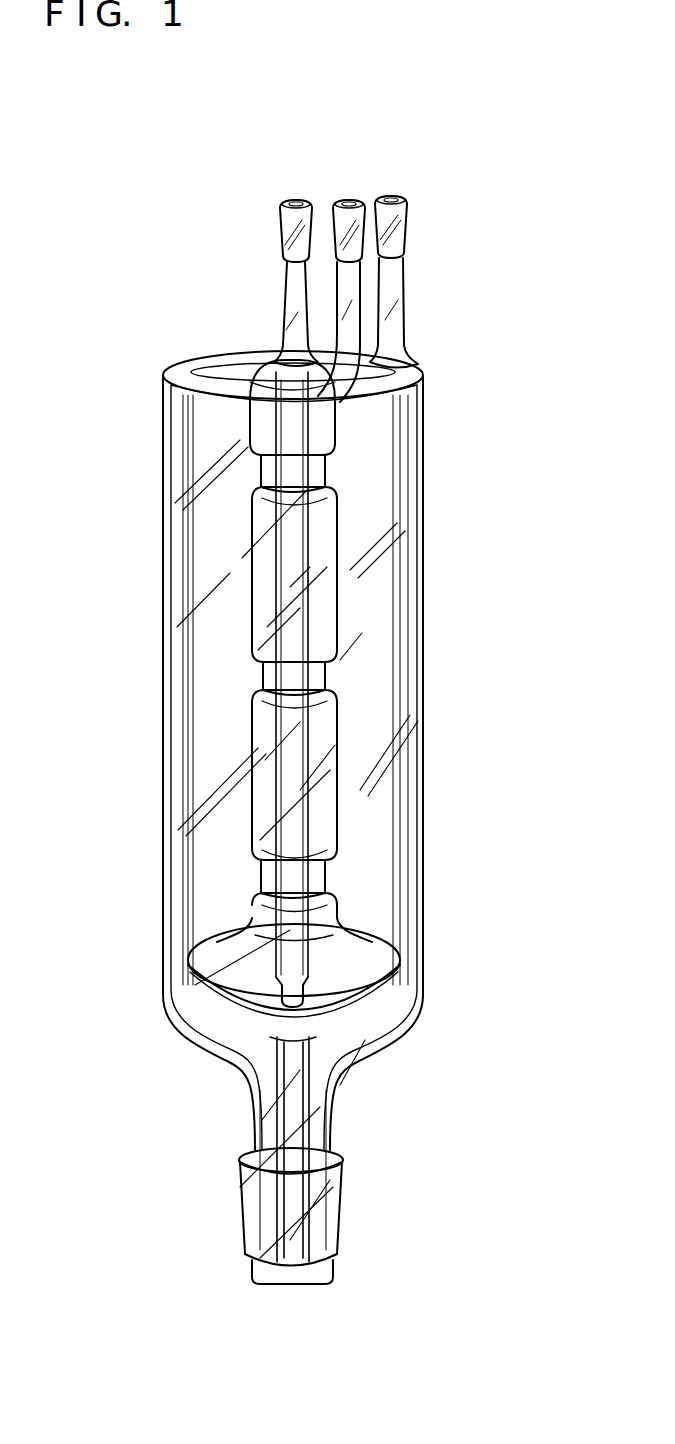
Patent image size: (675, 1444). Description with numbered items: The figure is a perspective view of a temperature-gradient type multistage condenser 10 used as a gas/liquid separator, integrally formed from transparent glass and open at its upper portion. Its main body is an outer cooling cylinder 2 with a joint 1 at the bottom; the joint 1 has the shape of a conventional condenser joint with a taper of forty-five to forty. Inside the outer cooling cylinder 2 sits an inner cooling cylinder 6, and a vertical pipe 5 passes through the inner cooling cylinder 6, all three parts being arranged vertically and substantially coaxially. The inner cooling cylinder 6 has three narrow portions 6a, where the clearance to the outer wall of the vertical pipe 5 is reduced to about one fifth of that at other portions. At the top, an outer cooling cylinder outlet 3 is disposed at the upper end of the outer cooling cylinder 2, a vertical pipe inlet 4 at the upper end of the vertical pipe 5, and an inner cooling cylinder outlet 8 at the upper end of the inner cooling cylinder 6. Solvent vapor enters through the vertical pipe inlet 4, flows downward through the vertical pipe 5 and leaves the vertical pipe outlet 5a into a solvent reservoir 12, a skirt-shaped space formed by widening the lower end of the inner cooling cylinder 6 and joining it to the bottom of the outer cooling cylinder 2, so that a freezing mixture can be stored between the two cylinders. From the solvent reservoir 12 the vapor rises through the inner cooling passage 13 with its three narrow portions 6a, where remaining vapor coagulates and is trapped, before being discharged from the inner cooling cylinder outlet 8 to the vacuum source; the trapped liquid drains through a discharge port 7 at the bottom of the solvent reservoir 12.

The joint 1 is at (345, 1215).
The outer cooling cylinder 2 is at (418, 616).
The outer cooling cylinder outlet 3 is at (400, 200).
The vertical pipe inlet 4 is at (296, 200).
The vertical pipe 5 is at (300, 742).
The vertical pipe outlet 5a is at (300, 990).
The inner cooling cylinder 6 is at (325, 820).
The narrow portions 6a is at (268, 481).
The discharge port 7 is at (330, 1140).
The inner cooling cylinder outlet 8 is at (356, 200).
The temperature-gradient type multistage condenser 10 is at (450, 497).
The solvent reservoir 12 is at (245, 972).
The inner cooling passage 13 is at (265, 582).